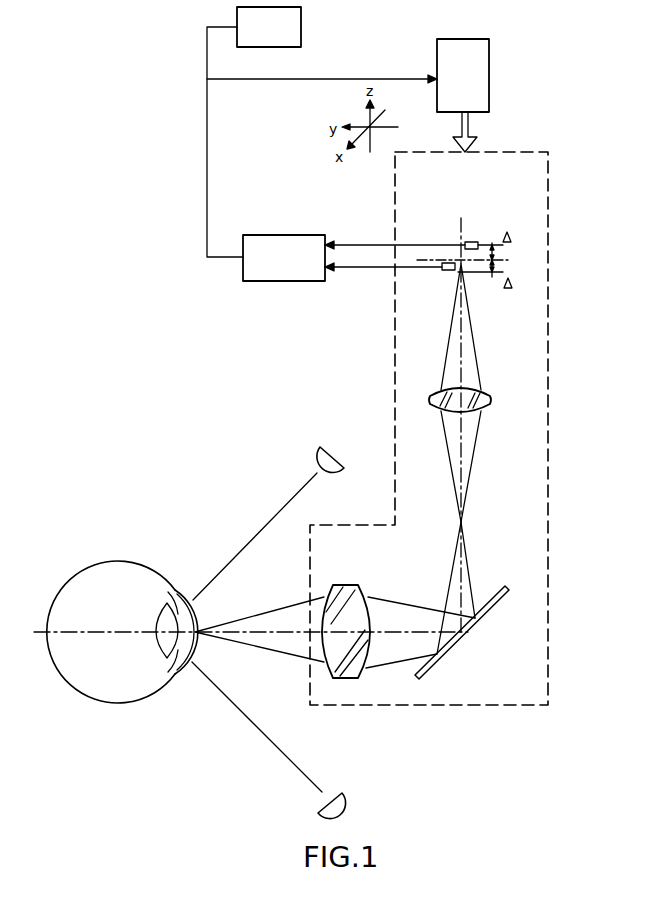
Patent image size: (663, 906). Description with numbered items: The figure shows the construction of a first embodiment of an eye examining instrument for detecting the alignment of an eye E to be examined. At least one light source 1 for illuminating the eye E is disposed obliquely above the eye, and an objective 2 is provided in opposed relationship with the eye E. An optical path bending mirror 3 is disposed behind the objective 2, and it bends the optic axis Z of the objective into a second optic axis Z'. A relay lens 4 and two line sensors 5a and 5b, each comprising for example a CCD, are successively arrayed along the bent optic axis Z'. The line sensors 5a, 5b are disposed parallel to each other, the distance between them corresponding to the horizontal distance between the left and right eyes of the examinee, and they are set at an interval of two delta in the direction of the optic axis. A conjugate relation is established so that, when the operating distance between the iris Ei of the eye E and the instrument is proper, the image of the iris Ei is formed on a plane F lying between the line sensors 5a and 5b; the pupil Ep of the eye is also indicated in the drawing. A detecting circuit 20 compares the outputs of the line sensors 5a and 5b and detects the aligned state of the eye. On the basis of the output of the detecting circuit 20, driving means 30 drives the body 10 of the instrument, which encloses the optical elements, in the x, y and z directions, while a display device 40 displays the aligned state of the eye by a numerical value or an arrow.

The body 10 is at (540, 184).
The detecting circuit 20 is at (293, 281).
The driving means 30 is at (489, 76).
The display device 40 is at (291, 20).
The light source 1 is at (340, 460).
The objective 2 is at (351, 585).
The optical path bending mirror 3 is at (478, 623).
The relay lens 4 is at (492, 397).
The line sensor 5a is at (447, 270).
The line sensor 5b is at (472, 242).
The eye to be examined E is at (126, 631).
The iris Ei is at (183, 600).
The pupil / crystalline lens Ep is at (187, 666).
The optic axis Z is at (289, 660).
The optic axis Z' is at (474, 393).
The plane F is at (508, 260).